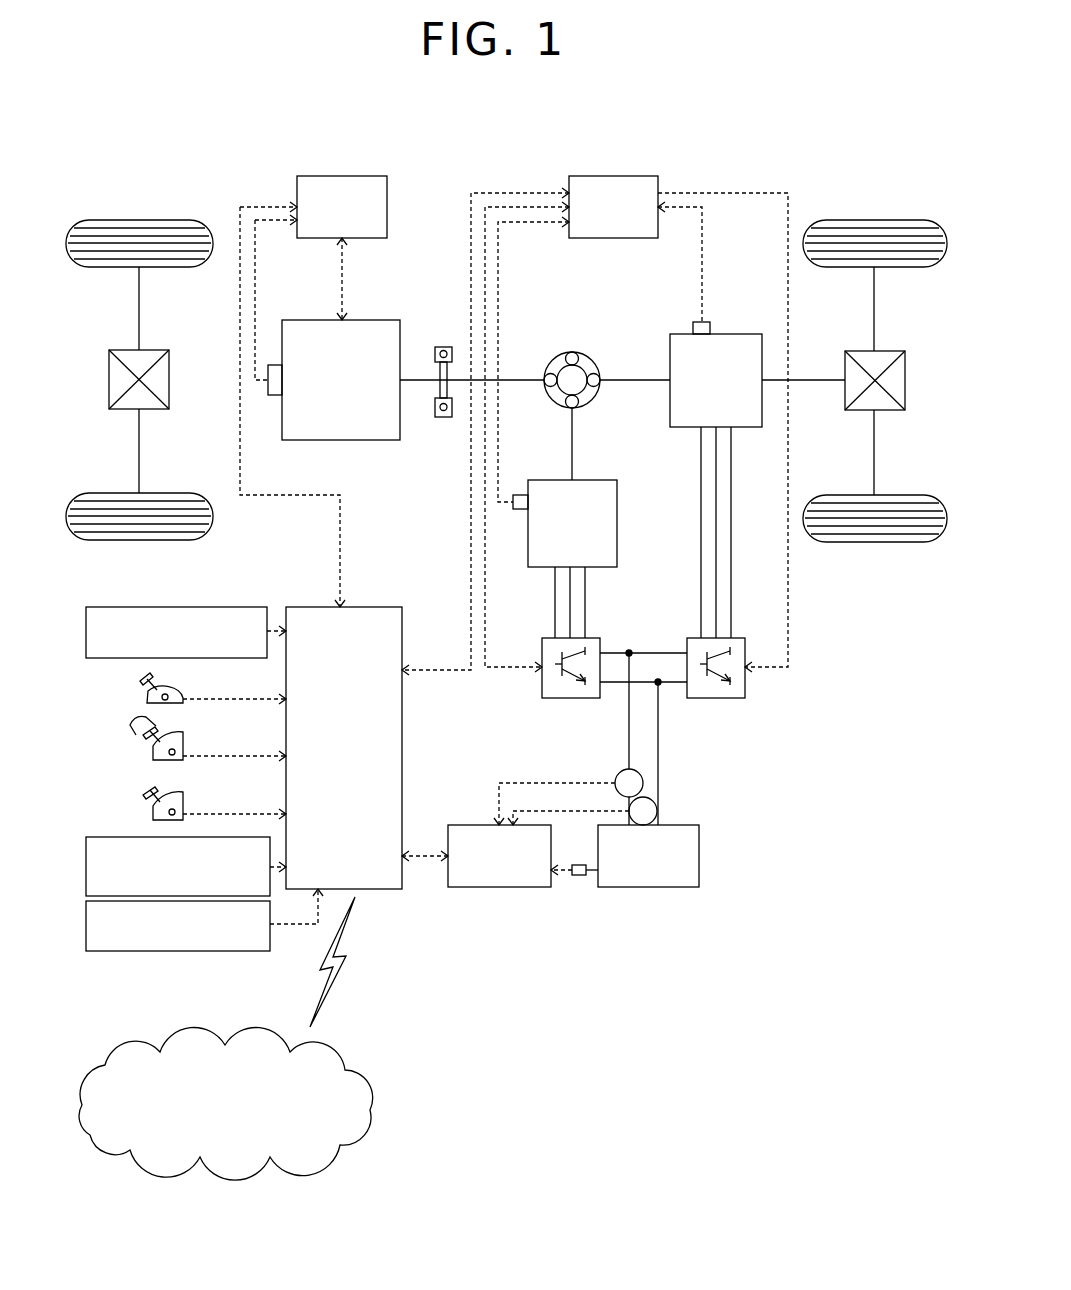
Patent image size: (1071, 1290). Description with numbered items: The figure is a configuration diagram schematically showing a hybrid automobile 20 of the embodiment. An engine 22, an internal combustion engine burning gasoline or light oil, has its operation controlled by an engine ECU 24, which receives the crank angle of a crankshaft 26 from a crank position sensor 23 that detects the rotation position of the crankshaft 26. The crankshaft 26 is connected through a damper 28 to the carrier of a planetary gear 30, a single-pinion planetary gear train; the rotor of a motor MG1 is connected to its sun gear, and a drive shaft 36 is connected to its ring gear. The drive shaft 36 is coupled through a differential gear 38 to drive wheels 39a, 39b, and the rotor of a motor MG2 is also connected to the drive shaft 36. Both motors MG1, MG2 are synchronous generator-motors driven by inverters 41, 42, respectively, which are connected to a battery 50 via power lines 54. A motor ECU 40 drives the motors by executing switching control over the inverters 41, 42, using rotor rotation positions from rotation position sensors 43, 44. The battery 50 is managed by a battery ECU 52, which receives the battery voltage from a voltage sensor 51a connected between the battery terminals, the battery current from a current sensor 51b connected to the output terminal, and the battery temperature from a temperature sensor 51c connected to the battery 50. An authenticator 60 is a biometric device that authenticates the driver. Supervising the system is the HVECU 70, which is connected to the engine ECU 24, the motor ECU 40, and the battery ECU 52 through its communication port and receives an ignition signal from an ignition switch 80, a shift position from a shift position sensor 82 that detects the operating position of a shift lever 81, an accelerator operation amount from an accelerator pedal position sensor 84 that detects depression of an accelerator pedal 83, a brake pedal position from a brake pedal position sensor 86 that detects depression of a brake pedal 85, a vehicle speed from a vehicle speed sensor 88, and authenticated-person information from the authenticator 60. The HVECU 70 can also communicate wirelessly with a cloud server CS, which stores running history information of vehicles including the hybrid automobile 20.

The hybrid automobile 20 is at (766, 147).
The engine 22 is at (386, 320).
The crank position sensor 23 is at (271, 398).
The engine ECU 24 is at (341, 176).
The crankshaft 26 is at (413, 378).
The damper 28 is at (442, 347).
The planetary gear 30 is at (572, 352).
The drive shaft 36 is at (805, 378).
The differential gear 38 is at (887, 351).
The drive wheel 39a is at (875, 220).
The drive wheel 39b is at (876, 545).
The motor ECU 40 is at (630, 176).
The inverter 41 is at (595, 638).
The inverter 42 is at (742, 638).
The rotation position sensor 43 is at (520, 495).
The rotation position sensor 44 is at (695, 322).
The battery 50 is at (699, 853).
The voltage sensor 51a is at (657, 811).
The current sensor 51b is at (643, 781).
The temperature sensor 51c is at (578, 878).
The battery ECU 52 is at (478, 825).
The power lines 54 is at (629, 718).
The authenticator 60 is at (86, 922).
The HVECU 70 is at (372, 607).
The ignition switch 80 is at (86, 632).
The shift lever 81 is at (150, 690).
The shift position sensor 82 is at (150, 700).
The accelerator pedal 83 is at (150, 745).
The accelerator pedal position sensor 84 is at (155, 752).
The brake pedal 85 is at (150, 803).
The brake pedal position sensor 86 is at (155, 812).
The vehicle speed sensor 88 is at (86, 866).
The motor MG1 is at (600, 480).
The motor MG2 is at (745, 334).
The cloud server CS is at (222, 1043).